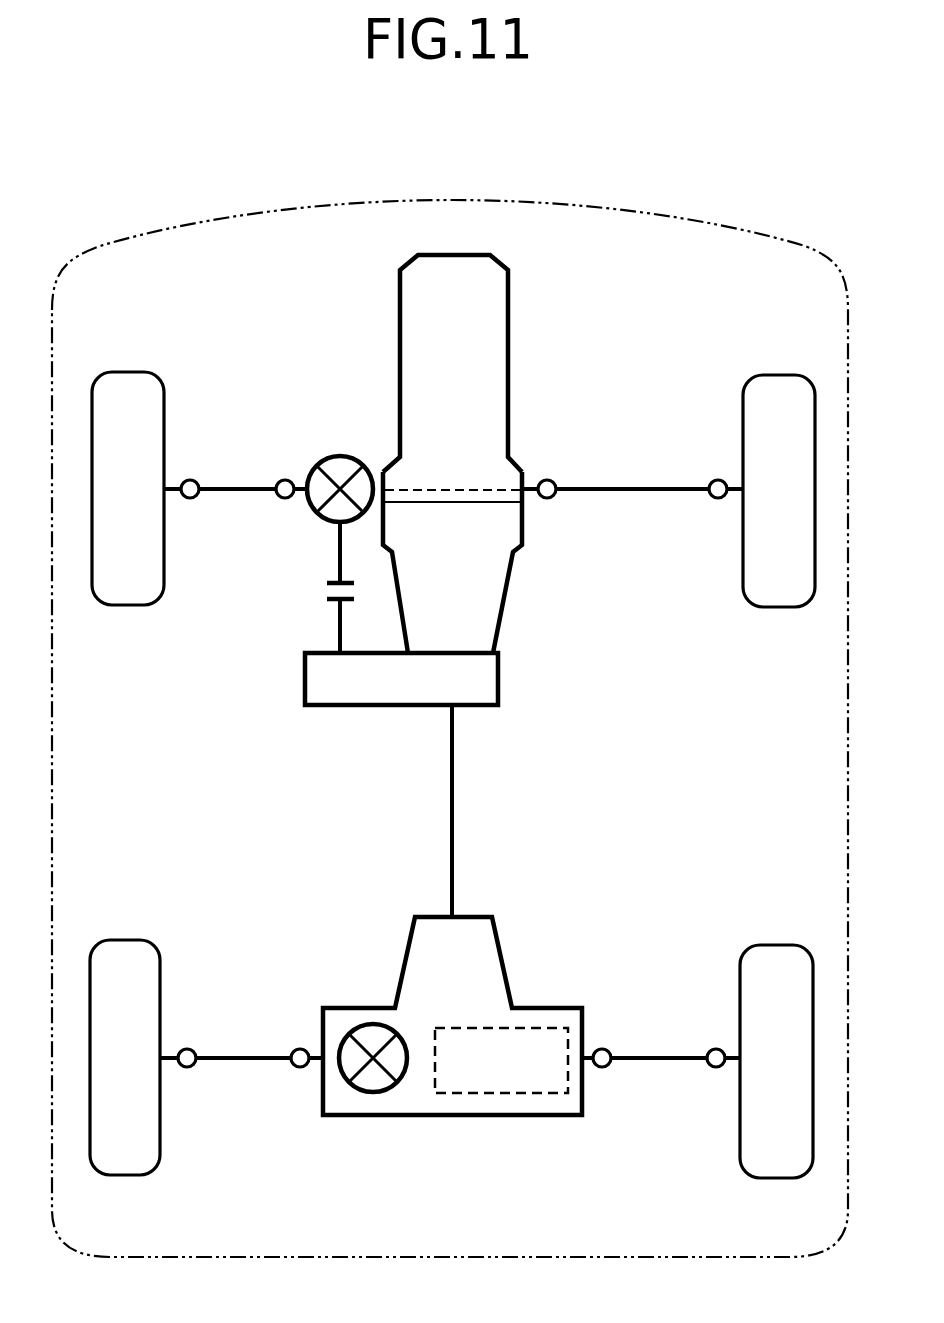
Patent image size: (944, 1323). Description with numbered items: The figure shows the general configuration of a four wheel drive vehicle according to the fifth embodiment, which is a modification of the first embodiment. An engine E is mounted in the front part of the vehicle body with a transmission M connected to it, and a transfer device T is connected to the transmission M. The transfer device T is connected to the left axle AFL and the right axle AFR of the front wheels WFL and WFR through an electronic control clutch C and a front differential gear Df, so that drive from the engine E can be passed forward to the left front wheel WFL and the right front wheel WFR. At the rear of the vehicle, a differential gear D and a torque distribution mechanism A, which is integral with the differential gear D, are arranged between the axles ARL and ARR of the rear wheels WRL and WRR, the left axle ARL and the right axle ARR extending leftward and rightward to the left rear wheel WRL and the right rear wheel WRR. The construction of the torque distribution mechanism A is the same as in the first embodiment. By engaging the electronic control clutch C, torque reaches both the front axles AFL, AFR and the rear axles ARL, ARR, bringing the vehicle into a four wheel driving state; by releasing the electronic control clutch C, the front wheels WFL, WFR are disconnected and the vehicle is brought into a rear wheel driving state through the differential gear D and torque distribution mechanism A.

The engine E is at (467, 371).
The transmission M is at (472, 586).
The transfer device T is at (413, 698).
The front differential gear Df is at (341, 470).
The electronic control clutch C is at (327, 600).
The differential gear D is at (368, 1082).
The torque distribution mechanism A is at (516, 1084).
The left front wheel WFL is at (117, 587).
The right front wheel WFR is at (780, 593).
The left rear wheel WRL is at (122, 966).
The right rear wheel WRR is at (775, 968).
The left axle AFL is at (258, 484).
The right axle AFR is at (672, 487).
The left axle ARL is at (250, 1062).
The right axle ARR is at (652, 1062).